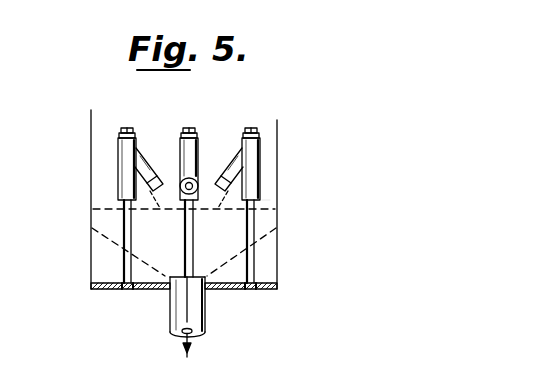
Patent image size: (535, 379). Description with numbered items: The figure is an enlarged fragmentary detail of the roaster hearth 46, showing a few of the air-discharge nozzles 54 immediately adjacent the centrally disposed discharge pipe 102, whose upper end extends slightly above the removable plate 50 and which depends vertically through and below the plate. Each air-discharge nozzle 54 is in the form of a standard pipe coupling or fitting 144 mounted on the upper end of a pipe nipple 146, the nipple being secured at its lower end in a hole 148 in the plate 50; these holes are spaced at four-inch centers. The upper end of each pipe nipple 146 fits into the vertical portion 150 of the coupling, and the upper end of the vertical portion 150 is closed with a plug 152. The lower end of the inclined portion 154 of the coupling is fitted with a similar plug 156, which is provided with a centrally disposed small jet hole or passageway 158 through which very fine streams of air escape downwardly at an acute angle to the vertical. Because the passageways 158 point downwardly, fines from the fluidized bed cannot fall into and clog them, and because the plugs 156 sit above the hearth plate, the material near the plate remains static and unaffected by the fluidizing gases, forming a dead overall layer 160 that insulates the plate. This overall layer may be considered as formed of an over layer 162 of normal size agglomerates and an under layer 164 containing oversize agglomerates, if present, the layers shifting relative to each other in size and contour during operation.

The hearth 46 is at (88, 273).
The removable plate 50 is at (162, 287).
The air-discharge nozzle 54 is at (268, 157).
The discharge pipe 102 is at (206, 319).
The pipe coupling 144 is at (110, 155).
The pipe nipple 146 is at (124, 222).
The hole 148 is at (126, 287).
The vertical portion 150 is at (119, 184).
The plug 152 is at (119, 133).
The inclined portion 154 is at (150, 150).
The plug 156 is at (172, 140).
The jet hole 158 is at (176, 203).
The dead overall layer 160 is at (264, 257).
The over layer 162 is at (266, 199).
The under layer 164 is at (264, 217).